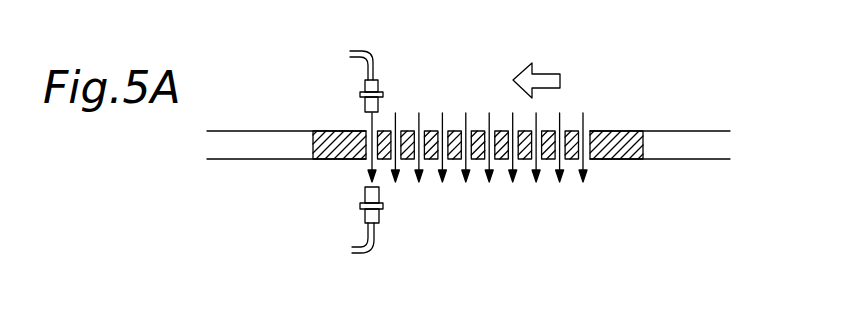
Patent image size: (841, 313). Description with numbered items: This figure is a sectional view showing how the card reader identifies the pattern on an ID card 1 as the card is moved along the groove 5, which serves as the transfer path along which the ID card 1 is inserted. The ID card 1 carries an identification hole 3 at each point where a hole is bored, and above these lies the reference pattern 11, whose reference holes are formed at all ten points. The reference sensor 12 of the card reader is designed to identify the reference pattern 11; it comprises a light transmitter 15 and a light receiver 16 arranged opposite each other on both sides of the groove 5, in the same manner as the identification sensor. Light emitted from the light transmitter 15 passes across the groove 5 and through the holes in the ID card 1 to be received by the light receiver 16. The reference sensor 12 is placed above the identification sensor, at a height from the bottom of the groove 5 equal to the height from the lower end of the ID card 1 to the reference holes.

The ID card 1 is at (621, 131).
The identification hole 3 is at (367, 130).
The groove 5 is at (673, 159).
The reference pattern 11 is at (590, 188).
The reference sensor 12 is at (367, 43).
The light transmitter 15 is at (389, 91).
The light receiver 16 is at (383, 217).